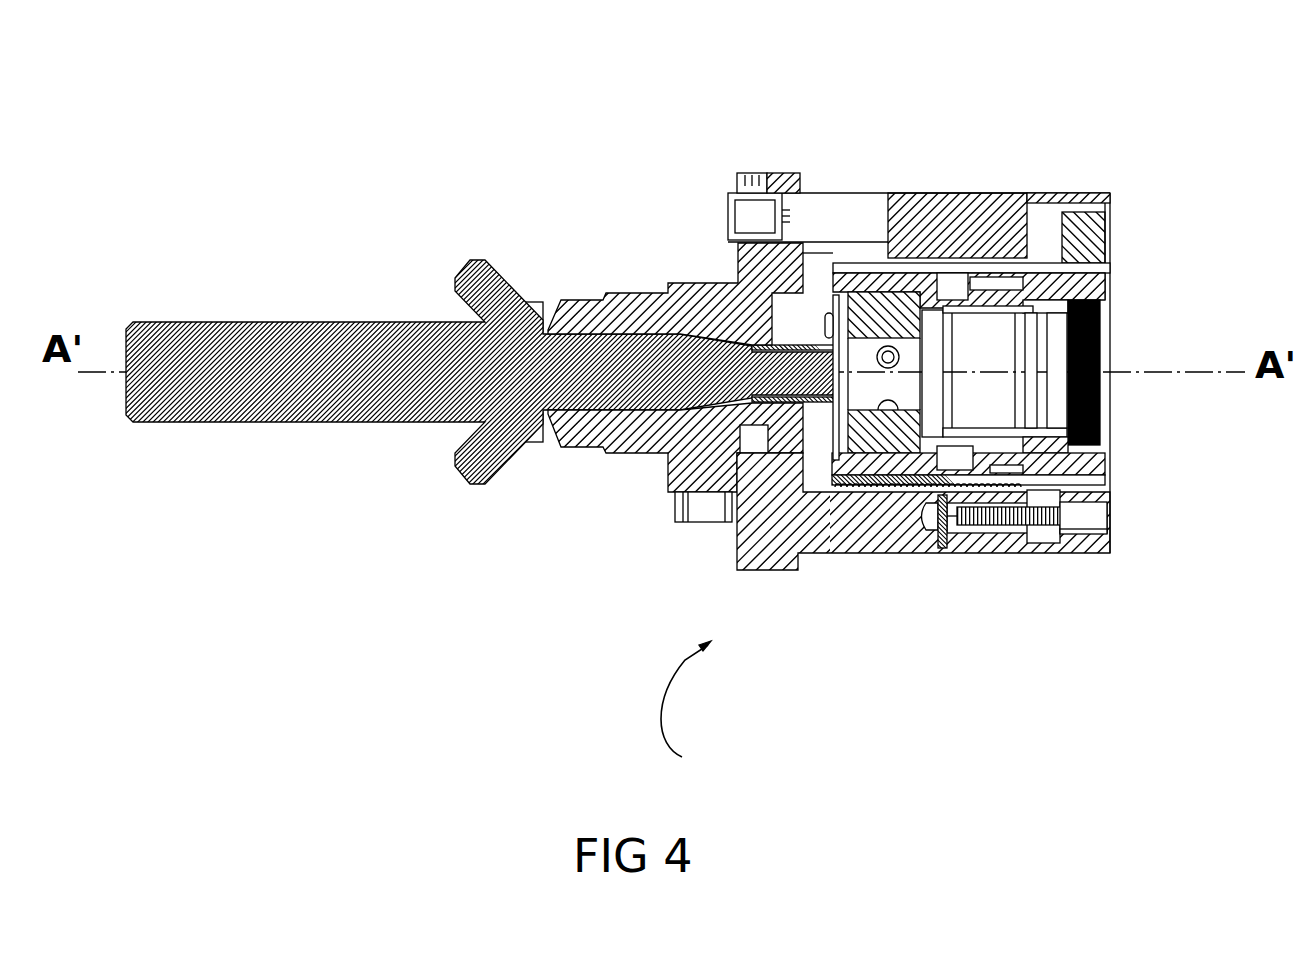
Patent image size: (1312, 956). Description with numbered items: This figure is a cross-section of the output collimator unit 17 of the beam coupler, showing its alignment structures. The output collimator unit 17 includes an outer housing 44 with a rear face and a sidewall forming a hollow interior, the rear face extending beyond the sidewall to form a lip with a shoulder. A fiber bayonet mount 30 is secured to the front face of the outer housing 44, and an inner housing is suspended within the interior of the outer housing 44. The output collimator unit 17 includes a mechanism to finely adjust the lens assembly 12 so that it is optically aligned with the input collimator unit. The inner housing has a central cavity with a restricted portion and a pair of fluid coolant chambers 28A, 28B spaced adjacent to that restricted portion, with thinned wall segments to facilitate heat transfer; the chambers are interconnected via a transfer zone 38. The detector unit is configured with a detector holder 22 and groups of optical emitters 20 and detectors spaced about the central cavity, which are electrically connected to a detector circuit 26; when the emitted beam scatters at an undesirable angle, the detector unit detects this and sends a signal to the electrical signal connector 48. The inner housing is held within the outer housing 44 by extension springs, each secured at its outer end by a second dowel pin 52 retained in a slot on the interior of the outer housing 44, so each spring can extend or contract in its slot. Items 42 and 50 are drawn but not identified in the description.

The lens assembly 12 is at (1105, 265).
The output collimator unit 17 is at (663, 730).
The optical emitters 20 is at (837, 493).
The detector holder 22 is at (888, 318).
The detector circuit 26 is at (835, 312).
The fluid coolant chamber 28A is at (962, 278).
The fluid coolant chamber 28B is at (1003, 470).
The fiber bayonet mount 30 is at (662, 427).
The transfer zone 38 is at (995, 267).
The retainer 42 is at (1107, 500).
The outer housing 44 is at (753, 520).
The electrical signal connector 48 is at (735, 188).
The adjustment screw 50 is at (1008, 525).
The second dowel pin 52 is at (935, 552).